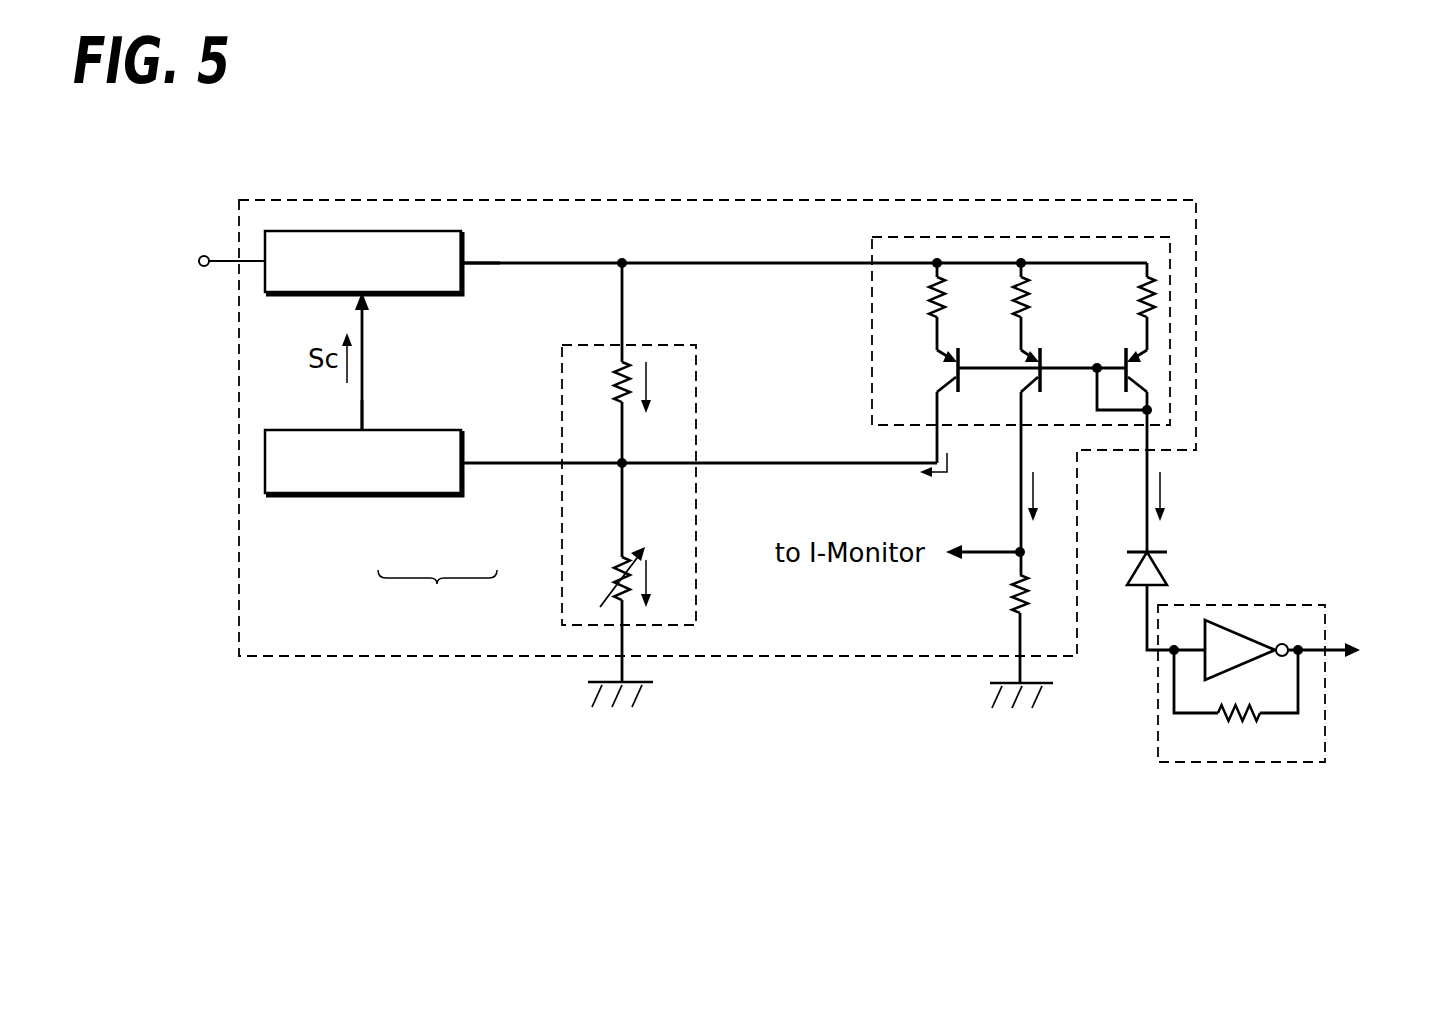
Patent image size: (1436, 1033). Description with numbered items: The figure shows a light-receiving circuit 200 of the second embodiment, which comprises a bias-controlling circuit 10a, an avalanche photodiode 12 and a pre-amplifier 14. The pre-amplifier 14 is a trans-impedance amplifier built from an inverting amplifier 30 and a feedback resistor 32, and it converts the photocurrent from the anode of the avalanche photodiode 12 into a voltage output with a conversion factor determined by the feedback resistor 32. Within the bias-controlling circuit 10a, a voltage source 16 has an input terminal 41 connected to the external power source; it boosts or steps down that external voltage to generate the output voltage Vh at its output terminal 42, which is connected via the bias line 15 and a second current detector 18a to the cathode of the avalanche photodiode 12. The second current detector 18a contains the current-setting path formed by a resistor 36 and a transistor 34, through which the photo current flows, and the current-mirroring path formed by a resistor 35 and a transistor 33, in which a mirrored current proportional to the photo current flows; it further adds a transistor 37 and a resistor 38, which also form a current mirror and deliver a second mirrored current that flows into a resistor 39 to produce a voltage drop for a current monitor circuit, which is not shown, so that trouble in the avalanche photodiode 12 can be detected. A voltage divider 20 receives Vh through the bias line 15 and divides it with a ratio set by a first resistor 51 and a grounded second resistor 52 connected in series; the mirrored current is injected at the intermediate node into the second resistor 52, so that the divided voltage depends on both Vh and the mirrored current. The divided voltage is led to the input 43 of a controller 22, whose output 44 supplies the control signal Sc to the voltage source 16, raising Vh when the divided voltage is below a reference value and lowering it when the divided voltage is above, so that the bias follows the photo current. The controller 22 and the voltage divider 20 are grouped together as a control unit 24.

The light-receiving circuit 200 is at (1285, 181).
The bias-controlling circuit 10a is at (1058, 200).
The input terminal 41 is at (204, 256).
The voltage source 16 is at (362, 231).
The output terminal 42 is at (462, 268).
The bias line 15 is at (795, 262).
The controller 22 is at (393, 494).
The output 44 is at (365, 430).
The input 43 is at (462, 463).
The voltage divider 20 is at (562, 517).
The control unit 24 is at (437, 592).
The first resistor 51 is at (630, 370).
The second resistor 52 is at (620, 602).
The second current detector 18a is at (1196, 310).
The resistor 35 is at (930, 286).
The resistor 38 is at (1013, 286).
The resistor 36 is at (1152, 283).
The transistor 33 is at (960, 390).
The transistor 37 is at (1043, 390).
The transistor 34 is at (1120, 355).
The resistor 39 is at (1015, 614).
The avalanche photodiode 12 is at (1160, 570).
The pre-amplifier 14 is at (1325, 715).
The inverting amplifier 30 is at (1232, 640).
The feedback resistor 32 is at (1225, 722).